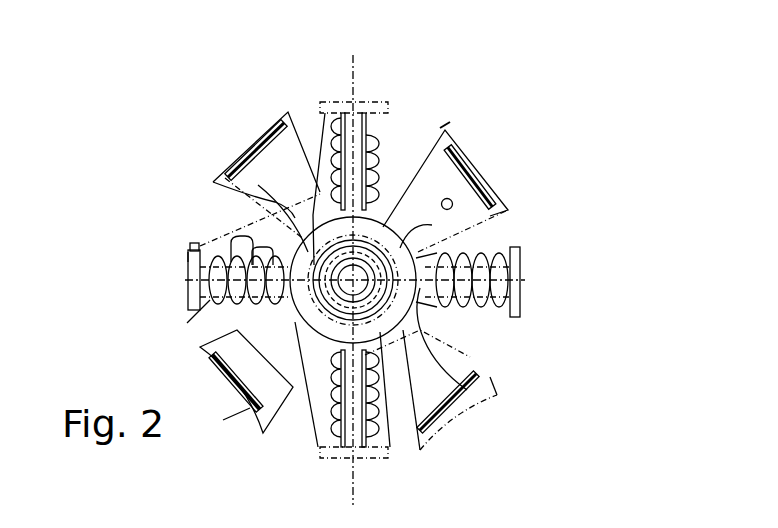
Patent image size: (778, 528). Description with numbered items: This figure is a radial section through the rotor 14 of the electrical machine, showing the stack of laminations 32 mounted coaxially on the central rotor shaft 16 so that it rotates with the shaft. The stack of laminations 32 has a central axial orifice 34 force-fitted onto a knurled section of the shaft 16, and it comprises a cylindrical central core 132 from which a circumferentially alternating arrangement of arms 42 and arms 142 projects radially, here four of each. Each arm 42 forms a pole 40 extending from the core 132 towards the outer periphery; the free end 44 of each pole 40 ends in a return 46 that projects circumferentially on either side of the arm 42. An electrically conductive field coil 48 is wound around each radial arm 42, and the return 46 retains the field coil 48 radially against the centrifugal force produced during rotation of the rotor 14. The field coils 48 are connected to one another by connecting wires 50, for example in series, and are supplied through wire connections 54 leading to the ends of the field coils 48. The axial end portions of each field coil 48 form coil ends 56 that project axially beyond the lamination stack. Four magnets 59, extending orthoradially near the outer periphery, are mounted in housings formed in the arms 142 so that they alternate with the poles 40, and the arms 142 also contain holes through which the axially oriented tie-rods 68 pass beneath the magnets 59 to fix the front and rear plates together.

The rotor 14 is at (533, 130).
The central rotor shaft 16 is at (364, 270).
The stack of laminations 32 is at (232, 178).
The central axial orifice 34 is at (490, 393).
The pole 40 is at (183, 333).
The arm 42 is at (232, 236).
The free end 44 is at (188, 257).
The return 46 is at (187, 323).
The field coil 48 is at (237, 223).
The connecting wires 50 is at (353, 283).
The wire connections 54 is at (323, 140).
The coil ends 56 is at (470, 332).
The magnet 59 is at (480, 160).
The tie-rod 68 is at (453, 202).
The cylindrical central core 132 is at (378, 352).
The arm 142 is at (450, 160).